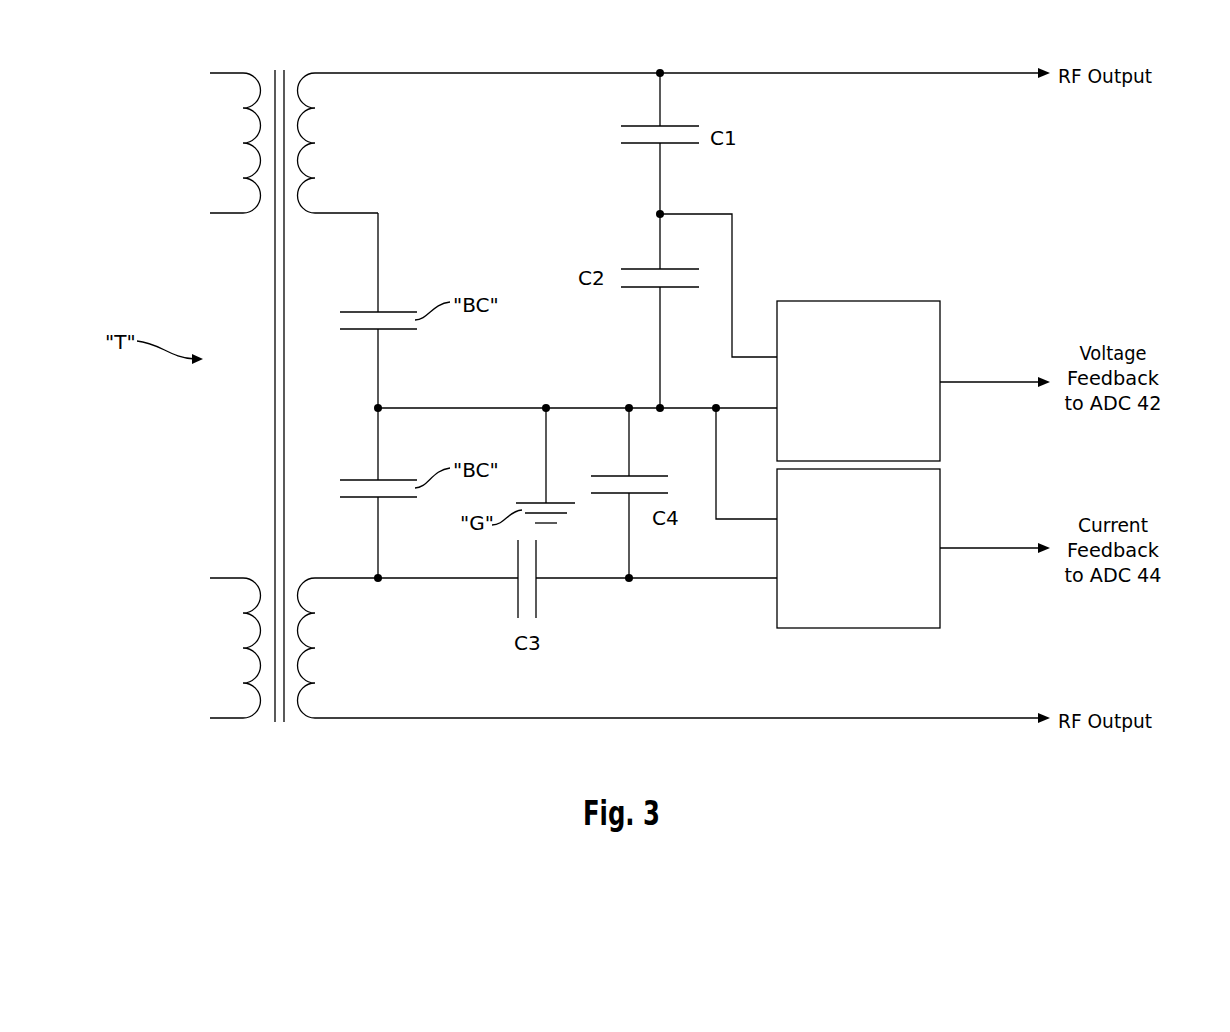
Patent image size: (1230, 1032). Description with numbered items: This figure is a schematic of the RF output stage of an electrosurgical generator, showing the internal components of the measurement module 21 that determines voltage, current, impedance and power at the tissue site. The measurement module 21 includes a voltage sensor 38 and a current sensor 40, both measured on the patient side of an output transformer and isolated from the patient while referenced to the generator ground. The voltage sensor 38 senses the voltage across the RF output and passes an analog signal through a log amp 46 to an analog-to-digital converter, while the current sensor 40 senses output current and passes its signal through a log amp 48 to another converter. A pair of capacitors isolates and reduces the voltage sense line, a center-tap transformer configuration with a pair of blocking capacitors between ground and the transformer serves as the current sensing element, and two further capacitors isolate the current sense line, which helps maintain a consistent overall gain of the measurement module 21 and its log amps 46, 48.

The measurement module 21 is at (147, 84).
The voltage sensor 38 is at (858, 366).
The current sensor 40 is at (858, 566).
The log amp 46 is at (847, 404).
The log amp 48 is at (847, 570).